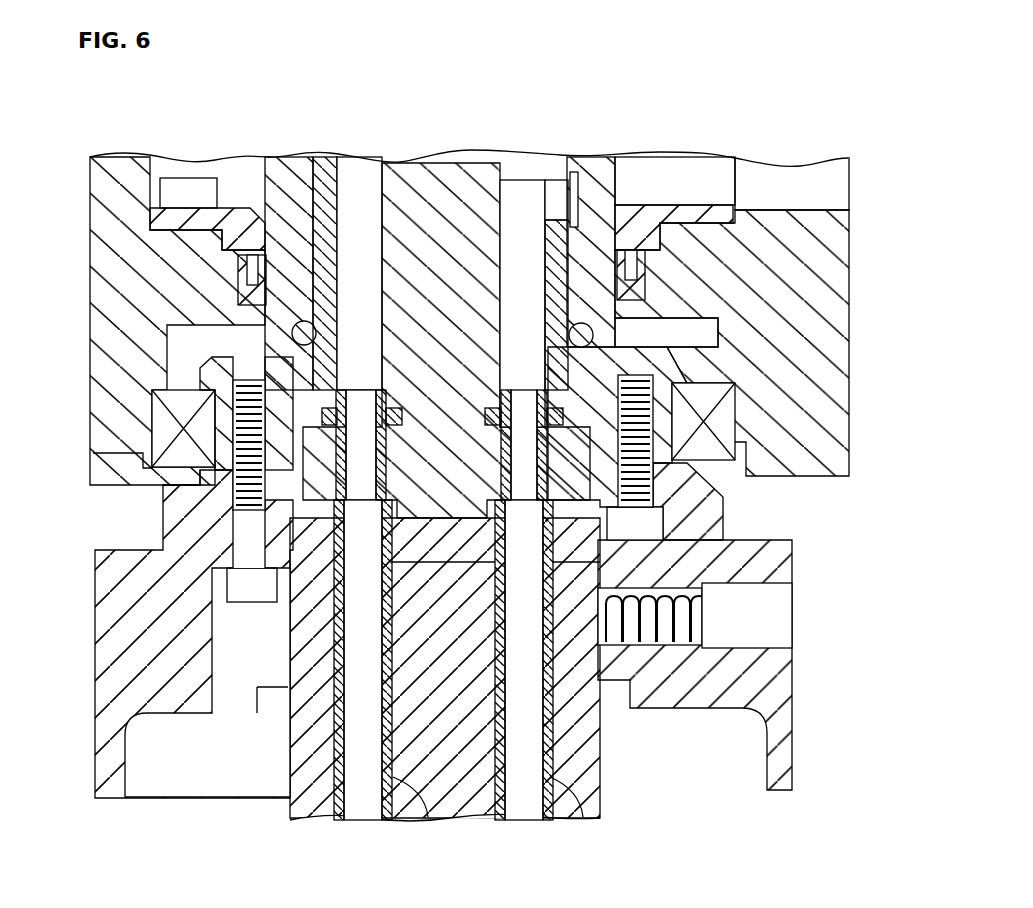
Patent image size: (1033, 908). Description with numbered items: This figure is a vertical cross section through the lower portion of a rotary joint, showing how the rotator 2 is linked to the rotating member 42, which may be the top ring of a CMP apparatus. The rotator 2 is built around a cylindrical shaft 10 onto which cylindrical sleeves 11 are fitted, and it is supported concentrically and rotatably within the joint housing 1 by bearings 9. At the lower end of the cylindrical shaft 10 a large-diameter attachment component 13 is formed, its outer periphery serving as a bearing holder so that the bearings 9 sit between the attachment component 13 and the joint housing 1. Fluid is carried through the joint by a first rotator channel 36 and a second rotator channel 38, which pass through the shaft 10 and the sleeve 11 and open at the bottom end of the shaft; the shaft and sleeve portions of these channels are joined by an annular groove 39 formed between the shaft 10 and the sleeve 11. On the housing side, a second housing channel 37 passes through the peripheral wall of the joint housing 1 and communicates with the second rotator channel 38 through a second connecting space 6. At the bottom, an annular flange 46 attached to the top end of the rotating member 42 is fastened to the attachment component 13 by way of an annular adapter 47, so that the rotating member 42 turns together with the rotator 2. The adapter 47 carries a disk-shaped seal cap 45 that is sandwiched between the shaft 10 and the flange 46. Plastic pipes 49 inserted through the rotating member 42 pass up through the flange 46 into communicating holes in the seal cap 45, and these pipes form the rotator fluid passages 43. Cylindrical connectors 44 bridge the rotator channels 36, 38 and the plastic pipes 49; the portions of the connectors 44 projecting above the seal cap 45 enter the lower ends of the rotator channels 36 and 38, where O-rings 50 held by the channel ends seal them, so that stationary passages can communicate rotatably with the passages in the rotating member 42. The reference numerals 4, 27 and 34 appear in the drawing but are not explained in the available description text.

The joint housing 1 is at (852, 243).
The rotator 2 is at (460, 148).
The pin 4 is at (640, 285).
The second connecting space 6 is at (650, 178).
The bearings 9 is at (160, 430).
The cylindrical shaft 10 is at (418, 195).
The cylindrical sleeves 11 is at (290, 165).
The attachment component 13 is at (690, 345).
The chamber 27 is at (185, 338).
The retainer flange 34 is at (693, 215).
The first rotator channel 36 is at (363, 185).
The second housing channel 37 is at (820, 185).
The second rotator channel 38 is at (522, 195).
The annular groove 39 is at (575, 200).
The rotating member 42 is at (282, 812).
The rotator fluid passages 43 is at (363, 800).
The connectors 44 is at (350, 390).
The seal cap 45 is at (300, 518).
The annular flange 46 is at (105, 588).
The annular adapter 47 is at (700, 508).
The plastic pipes 49 is at (513, 821).
The O-rings 50 is at (235, 365).